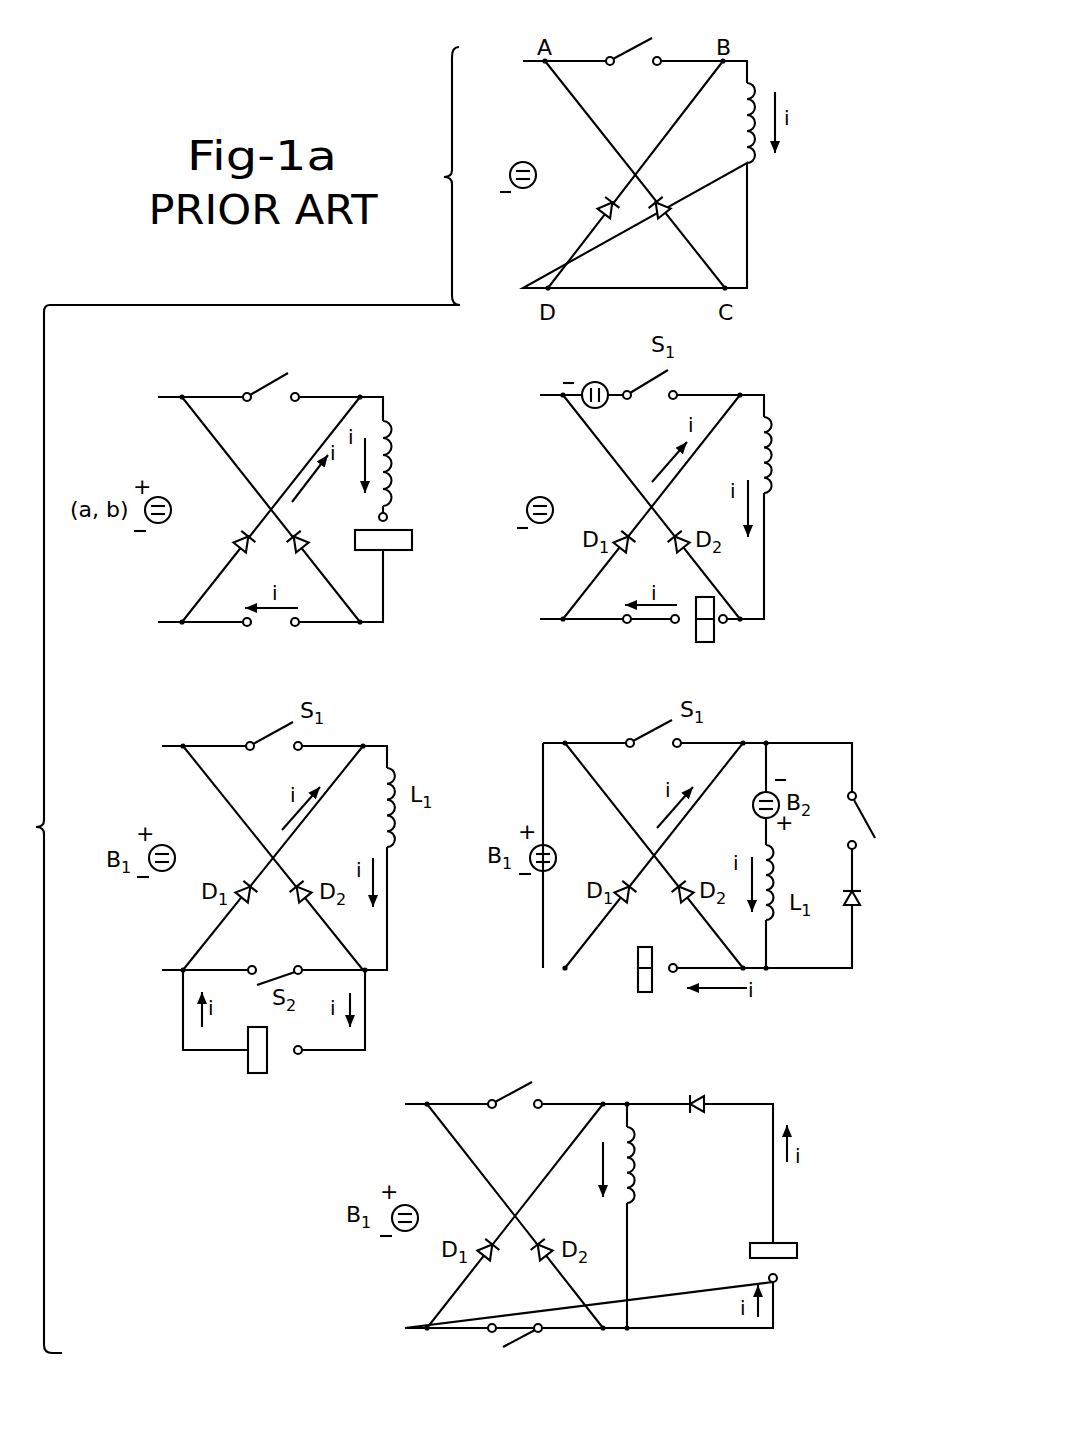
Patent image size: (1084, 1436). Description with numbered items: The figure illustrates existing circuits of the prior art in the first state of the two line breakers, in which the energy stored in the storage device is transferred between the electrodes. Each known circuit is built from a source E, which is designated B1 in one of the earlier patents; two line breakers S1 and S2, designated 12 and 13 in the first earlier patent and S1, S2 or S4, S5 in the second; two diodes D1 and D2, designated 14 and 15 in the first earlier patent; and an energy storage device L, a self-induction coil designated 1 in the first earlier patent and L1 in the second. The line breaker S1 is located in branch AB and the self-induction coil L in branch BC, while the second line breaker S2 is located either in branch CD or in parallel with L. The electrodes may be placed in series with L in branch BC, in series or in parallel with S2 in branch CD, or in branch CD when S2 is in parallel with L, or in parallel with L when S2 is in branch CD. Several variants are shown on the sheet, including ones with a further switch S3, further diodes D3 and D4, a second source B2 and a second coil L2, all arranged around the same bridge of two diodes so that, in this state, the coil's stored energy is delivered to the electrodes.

The self-induction coil 1 is at (403, 463).
The line breaker 12 is at (271, 366).
The line breaker 13 is at (271, 639).
The diode 14 is at (228, 536).
The diode 15 is at (313, 535).
The source E is at (507, 164).
The energy storage device L is at (764, 136).
The line breaker S1 is at (636, 36).
The line breaker S2 is at (651, 636).
The switch S3 is at (869, 819).
The line breaker S4 is at (515, 1349).
The line breaker S5 is at (515, 1075).
The diode D1 is at (619, 223).
The diode D2 is at (678, 208).
The diode D3 is at (868, 907).
The diode D4 is at (706, 1121).
The source B1 is at (520, 500).
The battery B2 is at (595, 375).
The self-induction coil L1 is at (785, 455).
The inductor L2 is at (647, 1165).